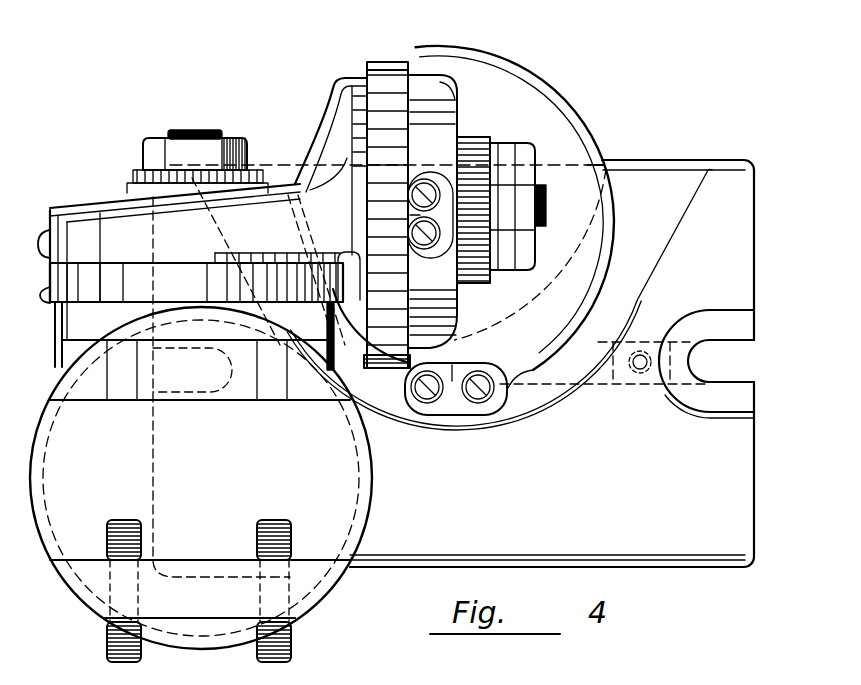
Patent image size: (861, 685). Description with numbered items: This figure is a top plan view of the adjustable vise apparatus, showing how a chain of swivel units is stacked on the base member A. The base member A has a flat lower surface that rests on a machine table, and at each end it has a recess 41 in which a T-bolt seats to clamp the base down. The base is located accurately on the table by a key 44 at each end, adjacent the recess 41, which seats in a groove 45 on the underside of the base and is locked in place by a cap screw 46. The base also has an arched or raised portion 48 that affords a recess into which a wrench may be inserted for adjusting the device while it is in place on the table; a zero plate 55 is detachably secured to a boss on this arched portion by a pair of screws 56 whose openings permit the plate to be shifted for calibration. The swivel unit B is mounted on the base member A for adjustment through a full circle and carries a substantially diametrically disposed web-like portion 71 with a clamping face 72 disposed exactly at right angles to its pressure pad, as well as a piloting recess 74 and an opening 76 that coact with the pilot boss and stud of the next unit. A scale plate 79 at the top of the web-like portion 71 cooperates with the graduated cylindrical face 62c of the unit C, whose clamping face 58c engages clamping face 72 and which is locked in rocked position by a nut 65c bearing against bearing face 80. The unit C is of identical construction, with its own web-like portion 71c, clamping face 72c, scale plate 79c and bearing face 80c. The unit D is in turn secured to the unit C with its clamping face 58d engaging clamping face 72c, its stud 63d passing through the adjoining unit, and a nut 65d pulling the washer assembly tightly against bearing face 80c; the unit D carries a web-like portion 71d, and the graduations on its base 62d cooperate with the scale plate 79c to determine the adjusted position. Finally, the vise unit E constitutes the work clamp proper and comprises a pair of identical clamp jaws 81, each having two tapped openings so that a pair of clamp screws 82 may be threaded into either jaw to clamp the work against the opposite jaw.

The base member A is at (758, 490).
The recess 41 is at (748, 345).
The cap screw 46 is at (644, 352).
The key 44 is at (626, 386).
The groove 45 is at (574, 387).
The arched or raised portion 48 is at (603, 165).
The swivel unit B is at (456, 122).
The zero plate 55 is at (453, 404).
The screw 56 is at (490, 400).
The cylindrical face 62c is at (392, 62).
The clamping face 58c is at (387, 66).
The clamping face 72 is at (424, 76).
The web-like portion 71 is at (445, 94).
The scale plate 79 is at (419, 262).
The bearing face 80 is at (494, 276).
The nut 65c is at (520, 160).
The unit C is at (102, 206).
The bearing face 80c is at (288, 186).
The web-like portion 71c is at (78, 213).
The scale plate 79c is at (46, 230).
The nut 65d is at (152, 143).
The stud 63d is at (206, 130).
The clamping face 72c is at (88, 265).
The clamping face 58d is at (97, 288).
The graduated base 62d is at (45, 298).
The web-like portion 71d is at (55, 348).
The unit D is at (57, 367).
The vise unit E is at (60, 582).
The clamp jaw 81 is at (95, 600).
The piloting recess 74 is at (199, 651).
The opening 76 is at (224, 622).
The clamp screw 82 is at (107, 647).